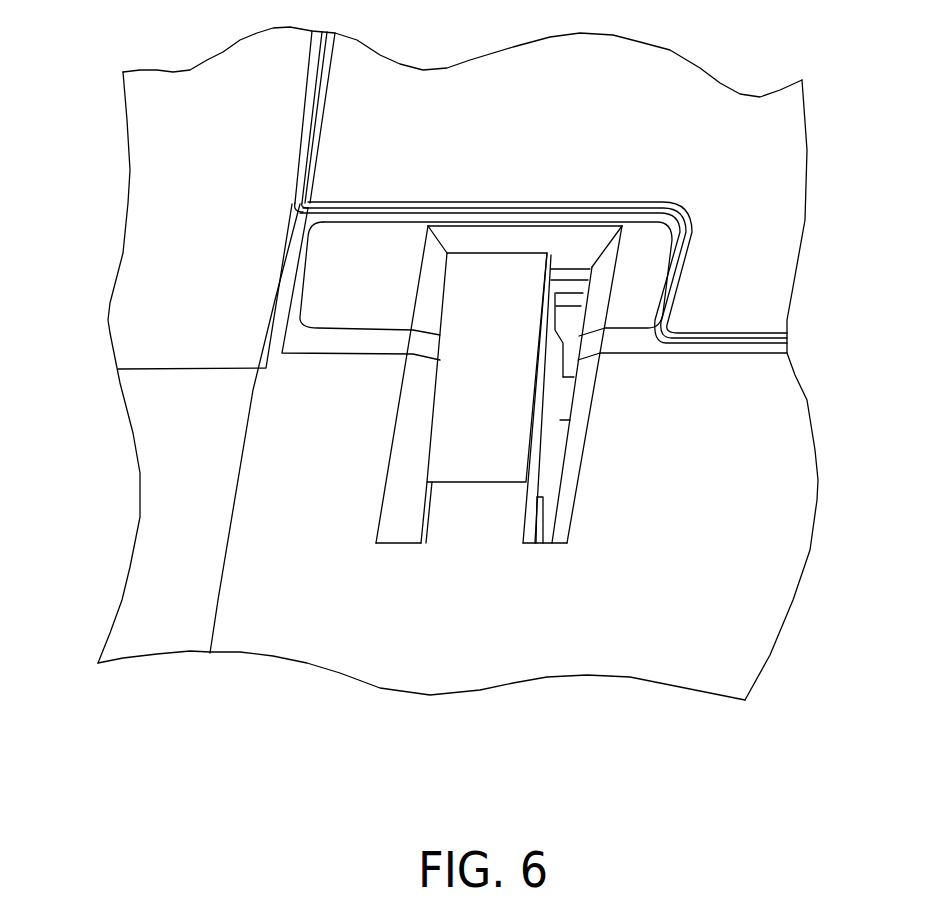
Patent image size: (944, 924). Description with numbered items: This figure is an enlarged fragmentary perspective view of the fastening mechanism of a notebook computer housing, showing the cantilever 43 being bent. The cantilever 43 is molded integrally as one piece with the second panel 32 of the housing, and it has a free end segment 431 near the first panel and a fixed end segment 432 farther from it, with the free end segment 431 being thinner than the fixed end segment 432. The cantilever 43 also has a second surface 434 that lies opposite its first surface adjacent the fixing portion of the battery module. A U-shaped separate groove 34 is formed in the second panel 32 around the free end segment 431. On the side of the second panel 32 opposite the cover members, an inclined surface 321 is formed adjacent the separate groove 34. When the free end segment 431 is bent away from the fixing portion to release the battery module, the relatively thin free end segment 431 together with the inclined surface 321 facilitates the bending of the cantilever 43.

The second panel 32 is at (282, 487).
The inclined surface 321 is at (583, 250).
The separate groove 34 is at (565, 262).
The cantilever 43 is at (462, 387).
The free end segment 431 is at (490, 277).
The fixed end segment 432 is at (472, 543).
The second surface 434 is at (468, 440).